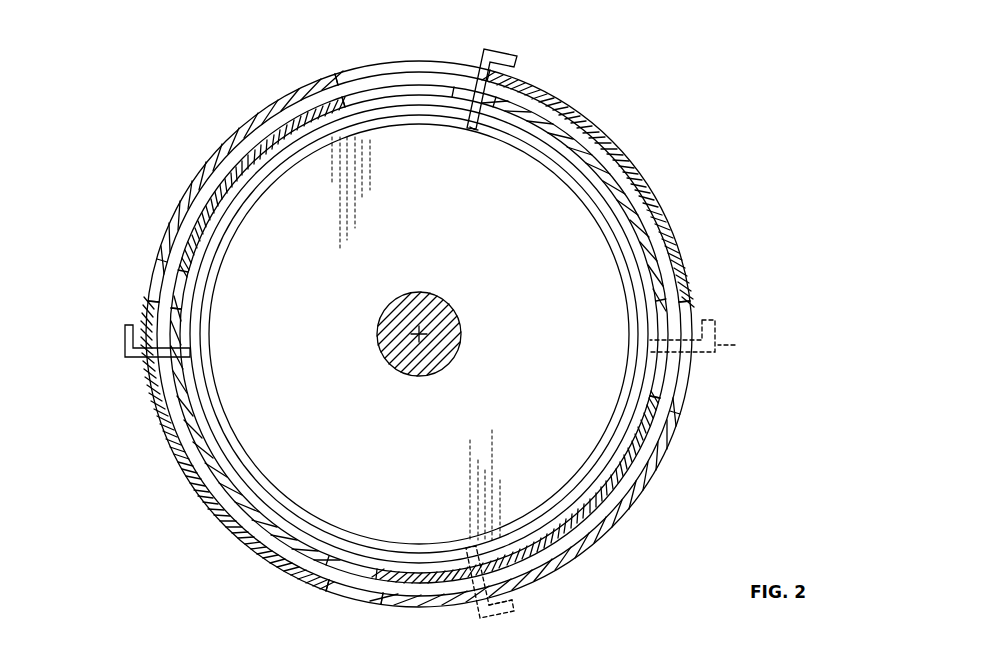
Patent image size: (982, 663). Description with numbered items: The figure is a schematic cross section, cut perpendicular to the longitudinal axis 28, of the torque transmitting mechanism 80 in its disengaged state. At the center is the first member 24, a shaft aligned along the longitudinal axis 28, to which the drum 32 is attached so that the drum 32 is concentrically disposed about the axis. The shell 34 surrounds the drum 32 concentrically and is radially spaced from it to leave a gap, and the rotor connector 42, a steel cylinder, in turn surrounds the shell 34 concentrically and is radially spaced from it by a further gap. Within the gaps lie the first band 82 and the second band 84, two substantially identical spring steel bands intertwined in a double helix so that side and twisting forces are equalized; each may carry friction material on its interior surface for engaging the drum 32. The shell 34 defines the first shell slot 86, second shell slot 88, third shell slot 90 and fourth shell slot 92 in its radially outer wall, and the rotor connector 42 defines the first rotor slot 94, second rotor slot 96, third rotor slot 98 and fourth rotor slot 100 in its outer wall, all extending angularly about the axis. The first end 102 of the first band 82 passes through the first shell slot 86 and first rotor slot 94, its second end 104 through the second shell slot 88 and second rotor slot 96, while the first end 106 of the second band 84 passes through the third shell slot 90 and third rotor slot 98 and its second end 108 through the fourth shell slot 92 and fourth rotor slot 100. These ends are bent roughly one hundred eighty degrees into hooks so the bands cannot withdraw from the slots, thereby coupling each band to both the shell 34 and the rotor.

The first member 24 is at (463, 335).
The longitudinal axis 28 is at (429, 331).
The drum 32 is at (590, 283).
The shell 34 is at (640, 216).
The rotor connector 42 is at (642, 177).
The torque transmitting mechanism 80 is at (672, 92).
The first band 82 is at (490, 126).
The second band 84 is at (196, 281).
The first shell slot 86 is at (348, 100).
The second shell slot 88 is at (350, 578).
The third shell slot 90 is at (152, 300).
The fourth shell slot 92 is at (660, 406).
The first rotor slot 94 is at (330, 72).
The second rotor slot 96 is at (336, 592).
The third rotor slot 98 is at (152, 312).
The fourth rotor slot 100 is at (690, 300).
The first end of the first band 102 is at (505, 50).
The second end of the first band 104 is at (505, 612).
The first end of the second band 106 is at (122, 345).
The second end of the second band 108 is at (740, 345).